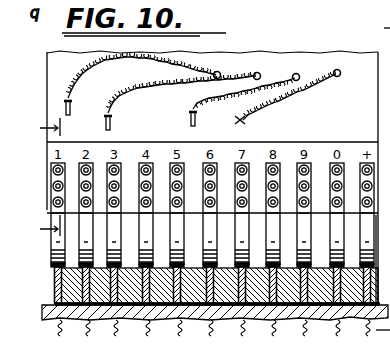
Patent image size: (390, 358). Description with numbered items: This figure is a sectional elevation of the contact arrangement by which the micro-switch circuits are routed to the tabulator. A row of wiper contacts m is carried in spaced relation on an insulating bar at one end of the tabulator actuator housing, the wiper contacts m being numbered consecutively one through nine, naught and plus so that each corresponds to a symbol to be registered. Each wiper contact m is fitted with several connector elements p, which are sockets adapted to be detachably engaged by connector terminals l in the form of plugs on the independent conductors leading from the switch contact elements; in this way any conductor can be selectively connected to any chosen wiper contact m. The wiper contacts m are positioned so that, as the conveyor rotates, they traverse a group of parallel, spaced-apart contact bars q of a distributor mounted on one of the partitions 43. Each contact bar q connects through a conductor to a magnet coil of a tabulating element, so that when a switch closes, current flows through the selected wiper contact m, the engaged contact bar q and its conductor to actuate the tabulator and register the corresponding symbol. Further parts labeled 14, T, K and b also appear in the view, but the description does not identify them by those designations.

The keyboard section width 14 is at (37, 178).
The connector elements p is at (50, 200).
The wiper contacts m is at (52, 249).
The contact bars q is at (383, 284).
The key bed block T is at (46, 296).
The partitions 43 is at (48, 314).
The springs K is at (114, 97).
The connector terminals l is at (104, 119).
The side wall b is at (383, 260).